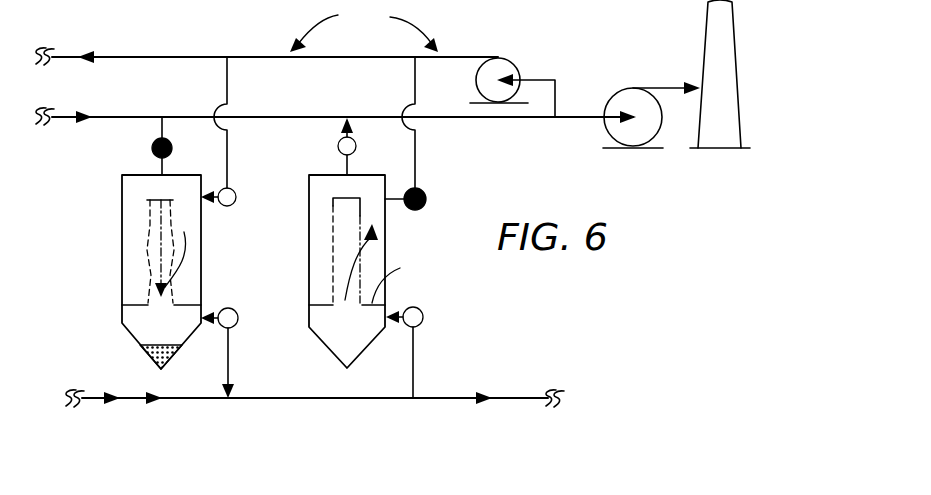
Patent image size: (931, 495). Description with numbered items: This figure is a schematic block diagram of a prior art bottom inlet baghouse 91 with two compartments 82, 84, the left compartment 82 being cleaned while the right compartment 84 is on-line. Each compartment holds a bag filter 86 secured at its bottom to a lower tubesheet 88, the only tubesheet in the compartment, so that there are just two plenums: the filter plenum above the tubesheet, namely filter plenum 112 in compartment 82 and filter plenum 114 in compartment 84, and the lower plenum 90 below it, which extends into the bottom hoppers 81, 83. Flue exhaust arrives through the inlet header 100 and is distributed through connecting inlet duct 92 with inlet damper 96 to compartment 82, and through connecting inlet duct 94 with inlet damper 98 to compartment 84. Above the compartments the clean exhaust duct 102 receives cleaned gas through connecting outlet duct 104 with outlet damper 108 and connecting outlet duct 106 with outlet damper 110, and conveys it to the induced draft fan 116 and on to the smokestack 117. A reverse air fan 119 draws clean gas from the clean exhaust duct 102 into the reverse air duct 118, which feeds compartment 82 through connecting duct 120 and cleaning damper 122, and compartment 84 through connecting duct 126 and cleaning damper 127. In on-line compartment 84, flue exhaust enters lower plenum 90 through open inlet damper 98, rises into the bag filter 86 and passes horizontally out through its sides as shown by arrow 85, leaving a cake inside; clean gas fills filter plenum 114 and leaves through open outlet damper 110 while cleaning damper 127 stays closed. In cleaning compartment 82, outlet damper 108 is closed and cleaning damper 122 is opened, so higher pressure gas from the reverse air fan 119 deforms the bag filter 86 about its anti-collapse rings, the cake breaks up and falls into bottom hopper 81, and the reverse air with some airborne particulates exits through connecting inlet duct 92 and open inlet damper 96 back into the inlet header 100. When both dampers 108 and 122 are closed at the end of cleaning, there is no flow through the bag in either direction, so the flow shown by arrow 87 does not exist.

The bottom hopper 81 is at (150, 352).
The compartment 82 is at (122, 245).
The bottom hopper 83 is at (330, 351).
The compartment 84 is at (309, 288).
The arrow 85 is at (372, 252).
The bag filter 86 is at (168, 222).
The arrow 87 is at (180, 255).
The lower tubesheet 88 is at (134, 305).
The lower plenum 90 is at (181, 333).
The bottom inlet baghouse 91 is at (364, 31).
The connecting inlet duct 92 is at (224, 330).
The connecting inlet duct 94 is at (413, 330).
The inlet damper 96 is at (238, 322).
The inlet damper 98 is at (424, 311).
The inlet header 100 is at (130, 400).
The clean exhaust duct 102 is at (252, 111).
The connecting outlet duct 104 is at (161, 162).
The connecting outlet duct 106 is at (347, 167).
The outlet damper 108 is at (172, 151).
The outlet damper 110 is at (356, 149).
The filter plenum 112 is at (145, 196).
The filter plenum 114 is at (317, 236).
The induced draft fan 116 is at (636, 74).
The smokestack 117 is at (742, 80).
The reverse air duct 118 is at (270, 62).
The reverse air fan 119 is at (512, 62).
The connecting duct 120 is at (229, 164).
The cleaning damper 122 is at (235, 203).
The connecting duct 126 is at (415, 163).
The cleaning damper 127 is at (437, 184).